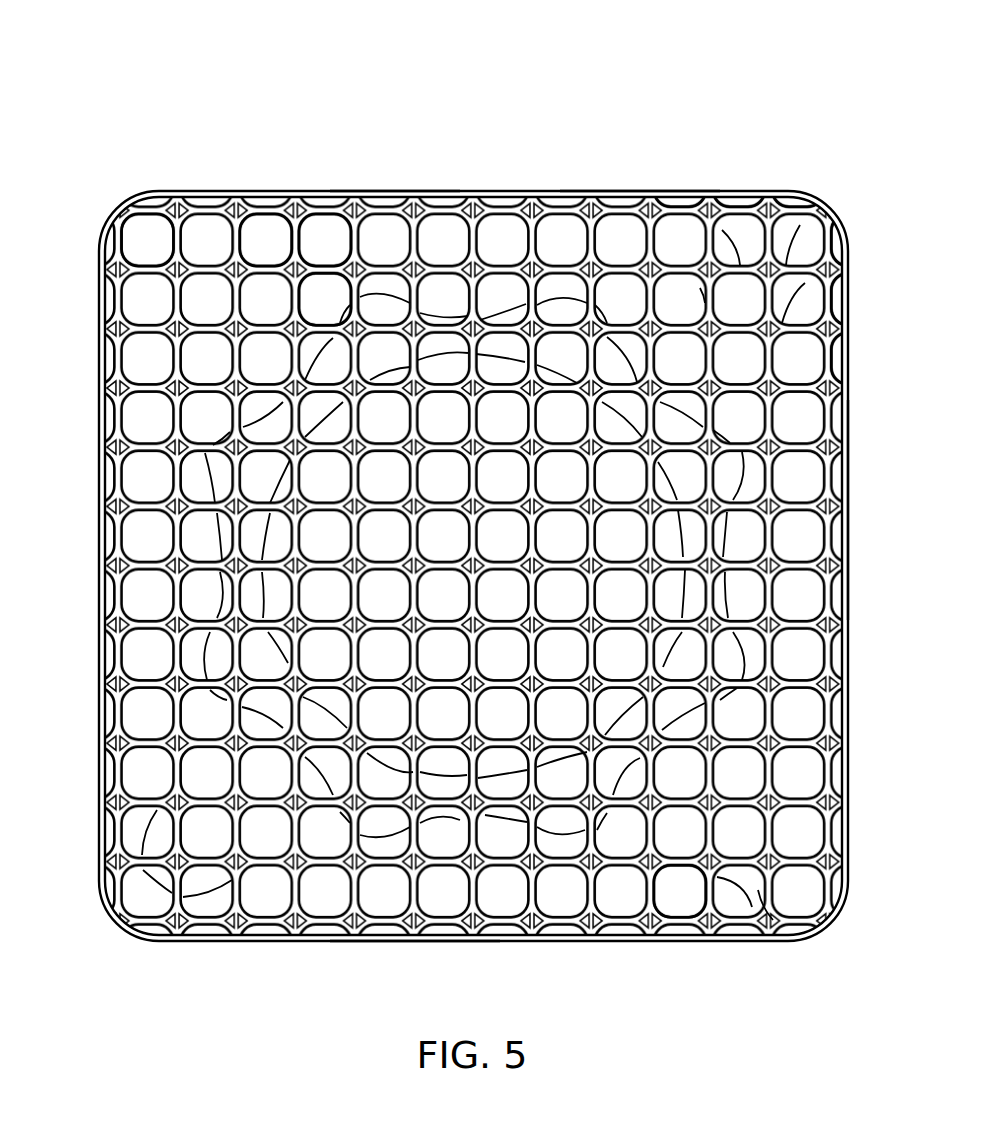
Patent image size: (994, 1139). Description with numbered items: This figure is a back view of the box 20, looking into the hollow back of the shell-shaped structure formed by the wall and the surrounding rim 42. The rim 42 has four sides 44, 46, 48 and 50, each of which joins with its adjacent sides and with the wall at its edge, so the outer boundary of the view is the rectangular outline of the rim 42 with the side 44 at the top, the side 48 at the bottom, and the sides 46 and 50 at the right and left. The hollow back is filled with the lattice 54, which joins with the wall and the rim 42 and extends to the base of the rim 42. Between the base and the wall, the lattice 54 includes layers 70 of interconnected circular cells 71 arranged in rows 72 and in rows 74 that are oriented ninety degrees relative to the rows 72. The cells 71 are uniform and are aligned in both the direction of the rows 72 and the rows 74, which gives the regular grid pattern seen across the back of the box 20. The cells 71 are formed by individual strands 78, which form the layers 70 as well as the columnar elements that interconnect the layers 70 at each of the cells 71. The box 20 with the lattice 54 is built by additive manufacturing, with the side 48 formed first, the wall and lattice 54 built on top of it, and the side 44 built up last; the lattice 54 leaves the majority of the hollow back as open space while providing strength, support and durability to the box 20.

The box 20 is at (473, 477).
The rim 42 is at (640, 142).
The side 44 is at (388, 191).
The side 46 is at (849, 512).
The side 48 is at (418, 943).
The side 50 is at (100, 515).
The lattice 54 is at (682, 862).
The layers 70 is at (148, 212).
The circular cells 71 is at (243, 238).
The rows 72 is at (683, 207).
The rows 74 is at (831, 247).
The strands 78 is at (749, 895).